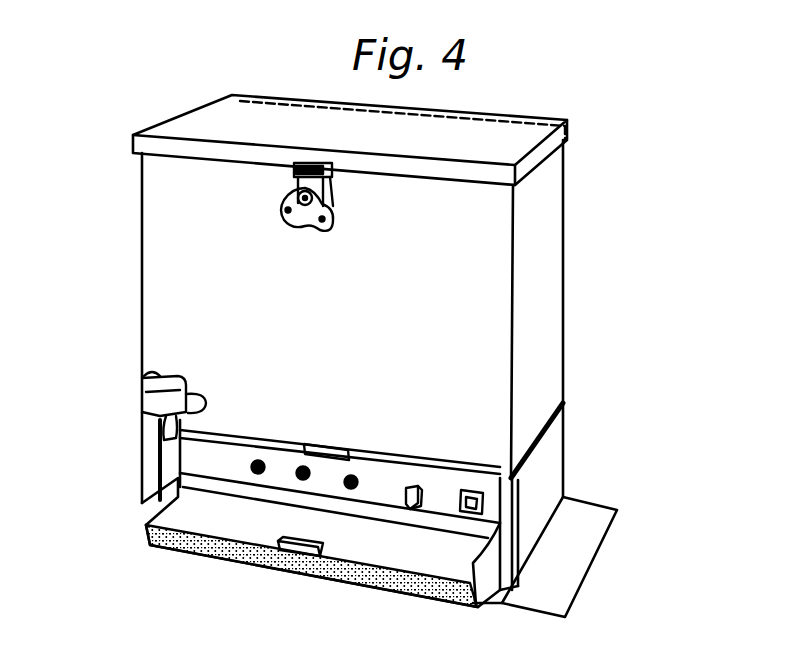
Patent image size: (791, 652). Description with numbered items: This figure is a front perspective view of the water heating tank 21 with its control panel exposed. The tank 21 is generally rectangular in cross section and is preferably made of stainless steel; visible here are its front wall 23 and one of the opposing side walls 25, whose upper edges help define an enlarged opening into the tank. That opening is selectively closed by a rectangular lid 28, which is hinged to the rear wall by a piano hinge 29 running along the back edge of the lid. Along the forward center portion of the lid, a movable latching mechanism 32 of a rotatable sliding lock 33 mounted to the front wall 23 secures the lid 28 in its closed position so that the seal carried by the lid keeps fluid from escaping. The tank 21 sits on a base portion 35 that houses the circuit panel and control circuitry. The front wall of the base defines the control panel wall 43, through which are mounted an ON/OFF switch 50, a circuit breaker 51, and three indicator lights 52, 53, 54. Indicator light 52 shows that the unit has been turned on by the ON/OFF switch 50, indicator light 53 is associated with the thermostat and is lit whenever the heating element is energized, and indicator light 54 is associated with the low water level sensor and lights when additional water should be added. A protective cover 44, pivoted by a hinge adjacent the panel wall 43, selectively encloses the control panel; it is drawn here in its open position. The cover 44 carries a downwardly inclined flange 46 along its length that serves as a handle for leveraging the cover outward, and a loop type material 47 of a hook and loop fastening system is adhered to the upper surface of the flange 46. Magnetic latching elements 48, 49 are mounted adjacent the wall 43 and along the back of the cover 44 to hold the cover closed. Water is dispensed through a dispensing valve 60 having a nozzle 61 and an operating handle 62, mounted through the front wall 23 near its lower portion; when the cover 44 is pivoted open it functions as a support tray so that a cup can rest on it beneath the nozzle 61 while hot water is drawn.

The water heating tank 21 is at (138, 307).
The front wall 23 is at (165, 243).
The side wall 25 is at (550, 240).
The lid 28 is at (203, 113).
The piano hinge 29 is at (510, 115).
The latching mechanism 32 is at (318, 164).
The rotatable sliding lock 33 is at (300, 230).
The base portion 35 is at (560, 477).
The control panel wall 43 is at (190, 448).
The protective cover 44 is at (144, 521).
The downwardly inclined flange 46 is at (185, 555).
The loop type material 47 is at (395, 588).
The magnetic latching element 48 is at (322, 450).
The magnetic latching element 49 is at (292, 548).
The ON/OFF switch 50 is at (471, 493).
The circuit breaker 51 is at (418, 488).
The indicator light 52 is at (356, 478).
The indicator light 53 is at (258, 460).
The indicator light 54 is at (303, 466).
The dispensing valve 60 is at (145, 405).
The nozzle 61 is at (162, 428).
The operating handle 62 is at (142, 356).